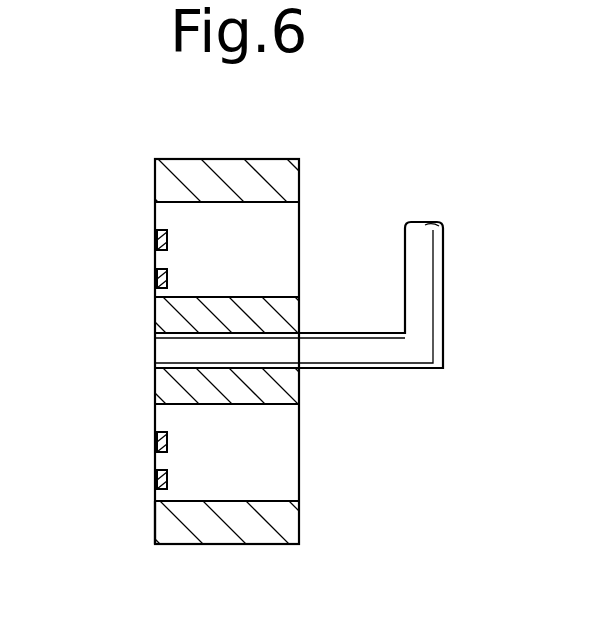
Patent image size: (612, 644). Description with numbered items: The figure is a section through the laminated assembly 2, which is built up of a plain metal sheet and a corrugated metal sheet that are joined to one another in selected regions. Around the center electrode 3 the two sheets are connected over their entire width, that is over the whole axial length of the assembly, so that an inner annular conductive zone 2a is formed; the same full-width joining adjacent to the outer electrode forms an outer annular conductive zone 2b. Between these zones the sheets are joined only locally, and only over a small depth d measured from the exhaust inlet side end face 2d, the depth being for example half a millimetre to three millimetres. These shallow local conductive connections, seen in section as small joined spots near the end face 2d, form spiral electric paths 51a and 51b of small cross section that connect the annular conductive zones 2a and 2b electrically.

The laminated assembly 2 is at (271, 159).
The annular conductive zone 2a is at (290, 318).
The annular conductive zone 2b is at (290, 180).
The exhaust inlet side end face 2d is at (153, 527).
The center electrode 3 is at (430, 350).
The spiral electric path 51a is at (155, 242).
The spiral electric path 51b is at (155, 280).